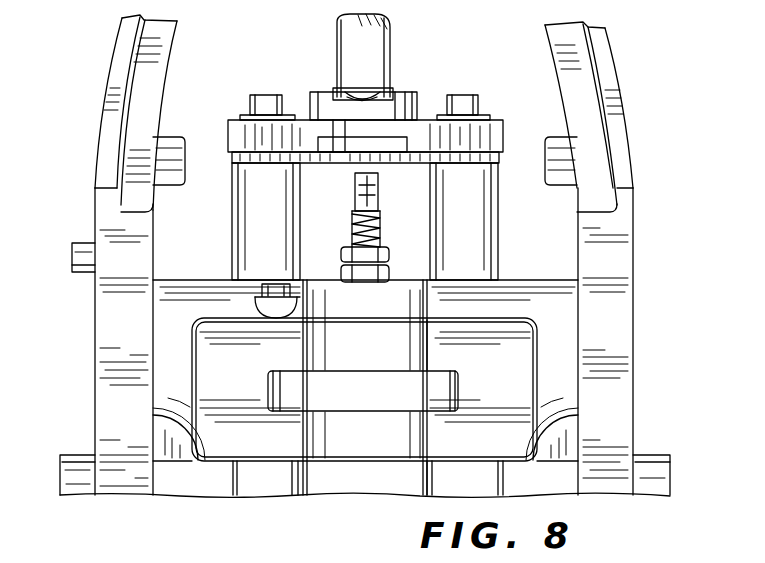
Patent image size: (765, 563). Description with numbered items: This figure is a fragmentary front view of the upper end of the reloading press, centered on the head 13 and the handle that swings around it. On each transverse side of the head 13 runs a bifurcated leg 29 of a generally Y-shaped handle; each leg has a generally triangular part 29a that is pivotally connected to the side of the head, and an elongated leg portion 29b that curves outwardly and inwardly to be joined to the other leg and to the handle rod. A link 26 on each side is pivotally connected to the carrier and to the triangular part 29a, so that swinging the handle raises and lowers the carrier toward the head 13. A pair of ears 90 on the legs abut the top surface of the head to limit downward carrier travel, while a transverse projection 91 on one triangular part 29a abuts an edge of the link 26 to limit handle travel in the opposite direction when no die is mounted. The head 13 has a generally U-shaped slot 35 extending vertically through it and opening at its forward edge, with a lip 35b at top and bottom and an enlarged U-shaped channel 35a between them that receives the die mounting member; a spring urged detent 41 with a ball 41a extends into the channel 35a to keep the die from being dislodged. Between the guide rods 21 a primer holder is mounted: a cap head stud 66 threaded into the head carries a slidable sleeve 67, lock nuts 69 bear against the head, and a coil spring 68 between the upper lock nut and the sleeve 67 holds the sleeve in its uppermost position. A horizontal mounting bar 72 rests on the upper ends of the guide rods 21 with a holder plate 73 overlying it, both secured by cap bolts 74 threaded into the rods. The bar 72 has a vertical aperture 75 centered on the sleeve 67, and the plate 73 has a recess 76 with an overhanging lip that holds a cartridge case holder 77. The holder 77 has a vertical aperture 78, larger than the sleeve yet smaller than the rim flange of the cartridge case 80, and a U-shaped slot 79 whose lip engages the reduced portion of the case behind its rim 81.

The head 13 is at (520, 373).
The guide rods 21 is at (236, 240).
The link 26 is at (72, 477).
The bifurcated legs 29 is at (628, 364).
The triangular part 29a is at (115, 388).
The elongated leg portion 29b is at (108, 97).
The slot 35 is at (285, 411).
The enlarged U-shaped channel 35a is at (460, 387).
The lip 35b is at (428, 350).
The spring urged detent 41 is at (268, 300).
The ball 41a is at (268, 382).
The cap head stud 66 is at (354, 226).
The sleeve 67 is at (378, 205).
The coil spring 68 is at (376, 234).
The lock nuts 69 is at (386, 272).
The horizontal mounting bar 72 is at (490, 170).
The holder plate 73 is at (492, 136).
The cap bolts 74 is at (468, 95).
The vertical aperture 75 is at (333, 158).
The recess 76 is at (408, 142).
The cartridge case holder 77 is at (415, 100).
The vertical aperture 78 is at (300, 100).
The U-shaped slot 79 is at (337, 95).
The cartridge case 80 is at (383, 45).
The rim 81 is at (375, 94).
The ears 90 is at (558, 182).
The transverse projection 91 is at (72, 270).